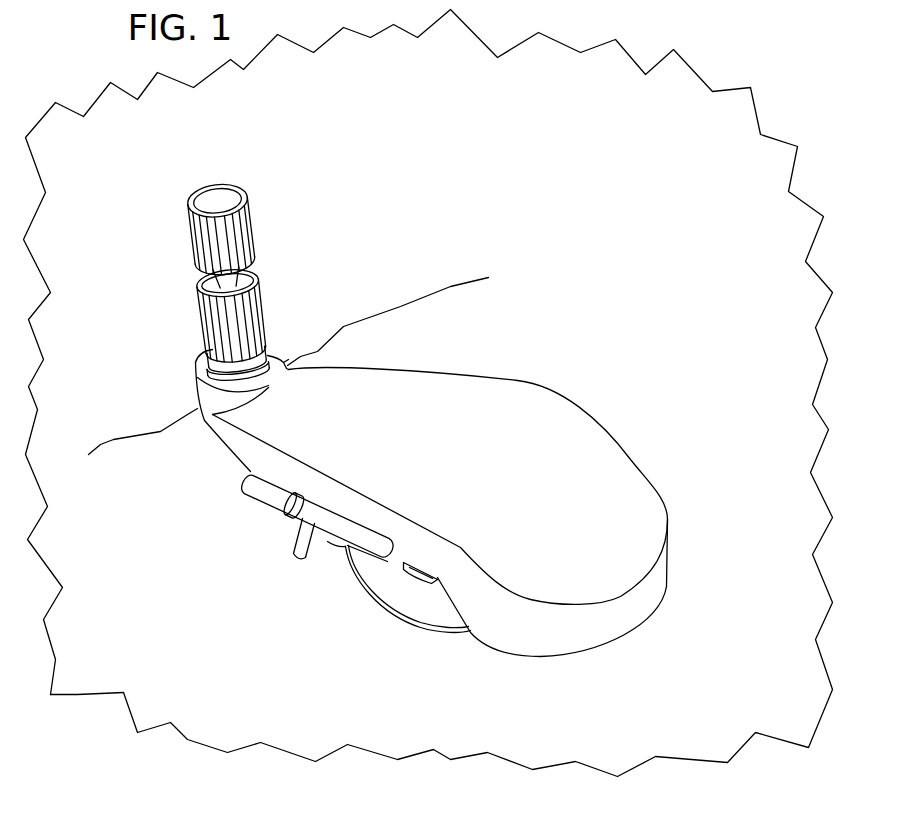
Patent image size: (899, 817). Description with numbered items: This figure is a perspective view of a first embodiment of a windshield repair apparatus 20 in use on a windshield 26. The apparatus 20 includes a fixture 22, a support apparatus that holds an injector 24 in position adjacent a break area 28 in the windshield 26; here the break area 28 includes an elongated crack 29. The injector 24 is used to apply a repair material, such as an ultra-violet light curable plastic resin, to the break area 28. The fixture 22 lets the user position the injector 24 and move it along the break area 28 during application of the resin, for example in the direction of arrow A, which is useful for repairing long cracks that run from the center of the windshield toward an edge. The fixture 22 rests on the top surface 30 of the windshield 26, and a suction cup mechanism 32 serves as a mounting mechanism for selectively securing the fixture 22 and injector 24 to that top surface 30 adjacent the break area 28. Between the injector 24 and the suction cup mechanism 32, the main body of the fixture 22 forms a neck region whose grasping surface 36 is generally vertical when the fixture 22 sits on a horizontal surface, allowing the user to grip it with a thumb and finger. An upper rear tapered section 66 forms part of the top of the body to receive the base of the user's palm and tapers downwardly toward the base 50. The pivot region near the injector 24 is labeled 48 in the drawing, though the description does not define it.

The windshield repair apparatus 20 is at (484, 544).
The fixture 22 is at (598, 650).
The injector 24 is at (227, 198).
The windshield 26 is at (85, 697).
The break area 28 is at (122, 440).
The elongated crack 29 is at (400, 307).
The top surface 30 is at (233, 637).
The suction cup mechanism 32 is at (413, 623).
The grasping surface 36 is at (302, 470).
The pivot boss 48 is at (200, 420).
The base 50 is at (662, 605).
The upper rear tapered section 66 is at (598, 537).
The arrow A is at (496, 345).